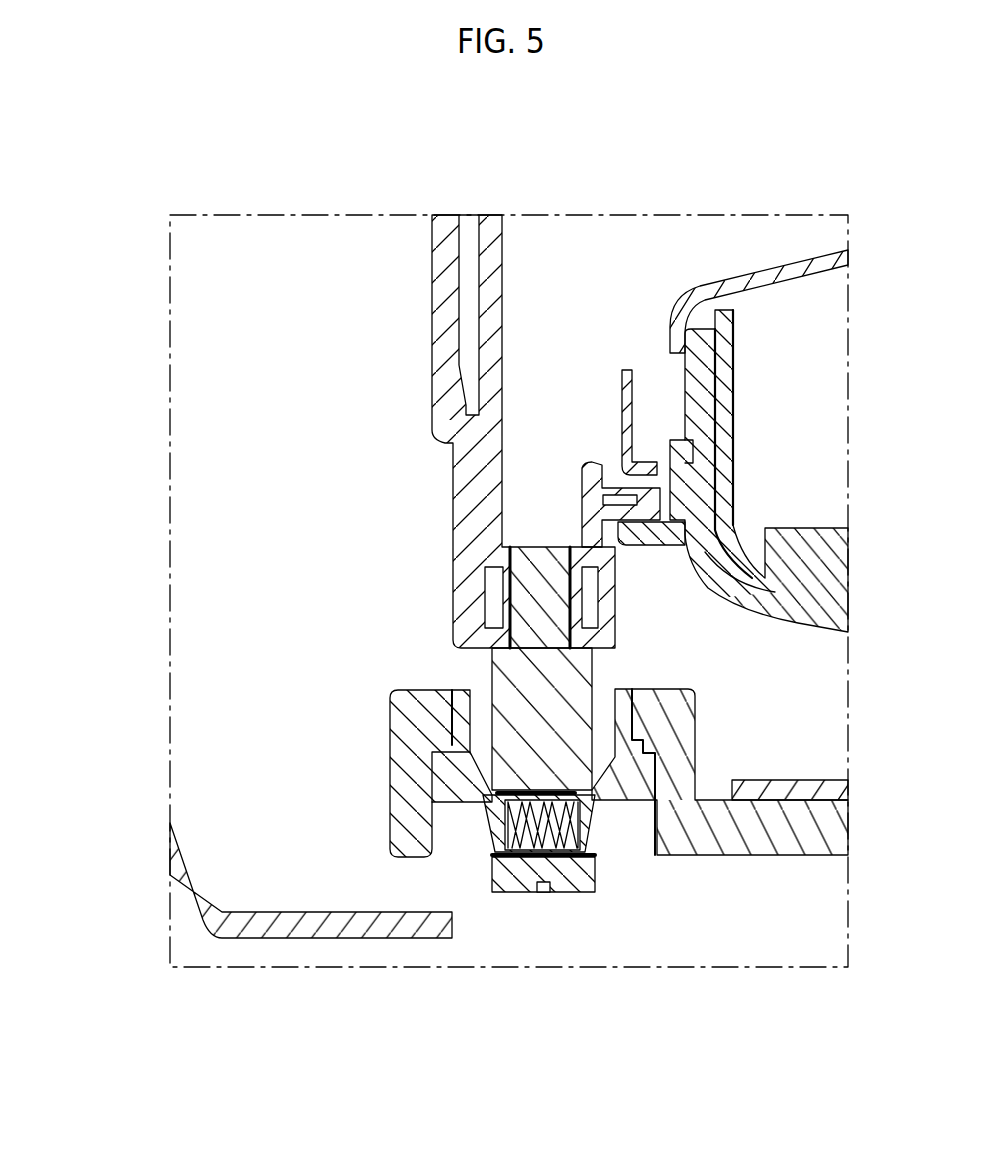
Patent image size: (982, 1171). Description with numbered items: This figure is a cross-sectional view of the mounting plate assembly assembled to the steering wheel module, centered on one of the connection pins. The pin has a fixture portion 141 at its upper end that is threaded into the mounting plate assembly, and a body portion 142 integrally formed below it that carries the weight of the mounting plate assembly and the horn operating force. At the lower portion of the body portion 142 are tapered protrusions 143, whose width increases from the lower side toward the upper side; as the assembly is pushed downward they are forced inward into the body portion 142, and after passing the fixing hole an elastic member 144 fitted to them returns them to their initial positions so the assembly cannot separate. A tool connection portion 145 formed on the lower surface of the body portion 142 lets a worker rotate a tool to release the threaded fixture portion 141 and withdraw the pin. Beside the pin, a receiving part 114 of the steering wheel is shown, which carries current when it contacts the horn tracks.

The fixture portion 141 is at (540, 612).
The body portion 142 is at (537, 695).
The receiving part 114 is at (446, 756).
The protrusion 143 is at (495, 812).
The elastic member 144 is at (518, 860).
The tool connection portion 145 is at (542, 888).